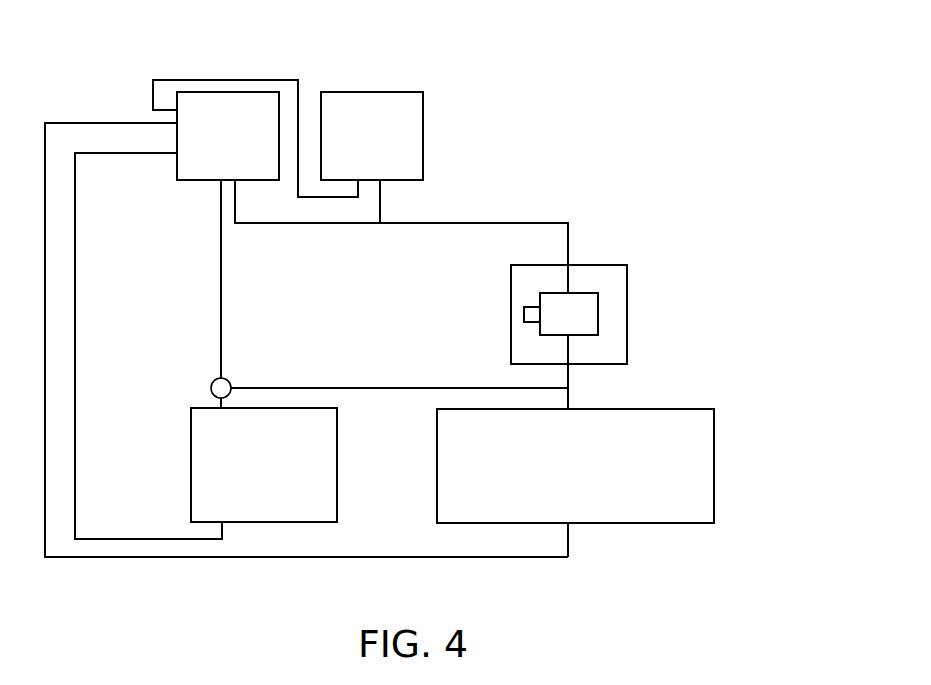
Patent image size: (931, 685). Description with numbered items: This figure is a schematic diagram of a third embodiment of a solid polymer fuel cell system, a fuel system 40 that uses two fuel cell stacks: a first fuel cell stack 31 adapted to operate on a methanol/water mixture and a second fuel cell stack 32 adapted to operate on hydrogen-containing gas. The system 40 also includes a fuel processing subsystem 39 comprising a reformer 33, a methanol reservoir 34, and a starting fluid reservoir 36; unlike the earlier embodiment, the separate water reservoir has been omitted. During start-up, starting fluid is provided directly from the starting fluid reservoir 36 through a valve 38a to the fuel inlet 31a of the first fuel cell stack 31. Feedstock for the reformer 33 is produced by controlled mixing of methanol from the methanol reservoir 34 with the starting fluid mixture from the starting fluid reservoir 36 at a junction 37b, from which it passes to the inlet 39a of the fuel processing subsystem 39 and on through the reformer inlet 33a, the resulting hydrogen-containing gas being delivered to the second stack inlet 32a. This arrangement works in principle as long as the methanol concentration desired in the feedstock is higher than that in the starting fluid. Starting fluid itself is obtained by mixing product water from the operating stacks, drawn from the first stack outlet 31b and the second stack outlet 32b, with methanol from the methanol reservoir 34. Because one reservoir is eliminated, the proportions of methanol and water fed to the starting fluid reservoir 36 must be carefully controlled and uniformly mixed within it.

The first fuel cell stack 31 is at (207, 437).
The fuel inlet 31a is at (224, 411).
The first stack outlet 31b is at (227, 526).
The second fuel cell stack 32 is at (673, 421).
The second stack inlet 32a is at (571, 411).
The second stack outlet 32b is at (572, 526).
The reformer 33 is at (585, 316).
The reformer inlet 33a is at (571, 261).
The methanol reservoir 34 is at (398, 105).
The starting fluid reservoir 36 is at (255, 103).
The junction 37b is at (385, 221).
The valve 38a is at (217, 385).
The fuel processing subsystem 39 is at (521, 279).
The fuel processing subsystem inlet 39a is at (524, 316).
The fuel system 40 is at (728, 85).